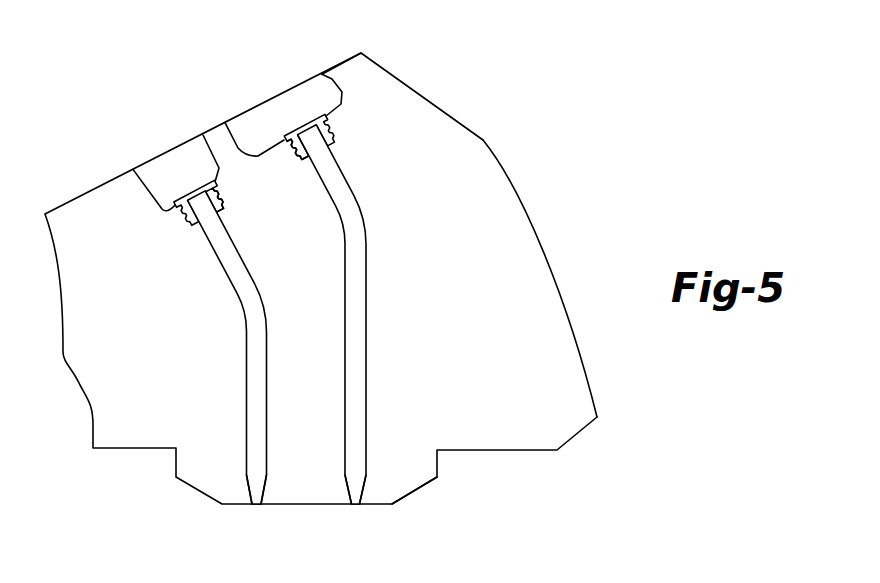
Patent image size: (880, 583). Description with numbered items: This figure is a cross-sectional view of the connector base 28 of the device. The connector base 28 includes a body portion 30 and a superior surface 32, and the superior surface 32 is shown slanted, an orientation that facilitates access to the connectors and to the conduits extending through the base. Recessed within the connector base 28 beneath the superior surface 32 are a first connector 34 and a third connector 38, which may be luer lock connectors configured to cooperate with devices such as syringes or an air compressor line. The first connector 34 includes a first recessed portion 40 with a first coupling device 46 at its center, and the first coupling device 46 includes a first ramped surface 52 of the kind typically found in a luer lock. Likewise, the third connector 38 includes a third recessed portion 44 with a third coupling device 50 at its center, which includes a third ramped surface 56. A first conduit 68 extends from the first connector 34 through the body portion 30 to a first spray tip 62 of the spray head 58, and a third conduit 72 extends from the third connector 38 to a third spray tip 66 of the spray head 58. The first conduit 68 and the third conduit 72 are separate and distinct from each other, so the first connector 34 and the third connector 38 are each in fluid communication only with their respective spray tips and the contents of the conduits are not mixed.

The connector base 28 is at (478, 155).
The body portion 30 is at (503, 180).
The superior surface 32 is at (352, 55).
The first connector 34 is at (330, 80).
The third connector 38 is at (200, 152).
The first recessed portion 40 is at (267, 152).
The third recessed portion 44 is at (162, 206).
The first coupling device 46 is at (337, 143).
The third coupling device 50 is at (183, 230).
The first ramped surface 52 is at (298, 160).
The third ramped surface 56 is at (220, 206).
The spray head 58 is at (424, 486).
The first spray tip 62 is at (355, 507).
The third spray tip 66 is at (255, 506).
The first conduit 68 is at (367, 270).
The third conduit 72 is at (222, 263).